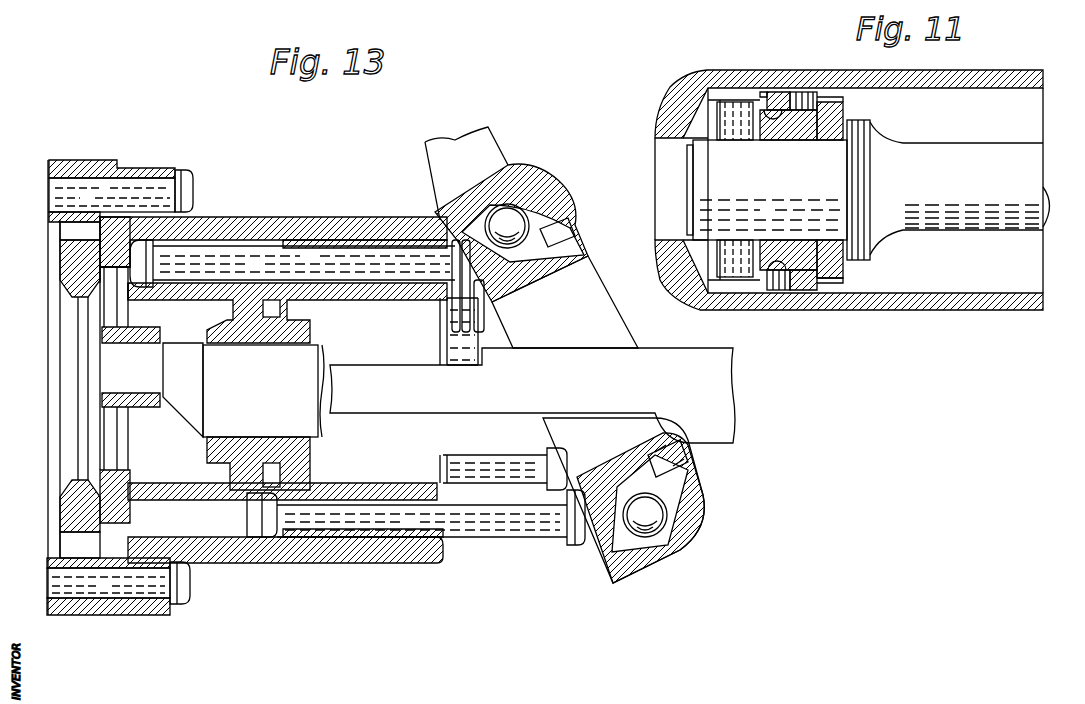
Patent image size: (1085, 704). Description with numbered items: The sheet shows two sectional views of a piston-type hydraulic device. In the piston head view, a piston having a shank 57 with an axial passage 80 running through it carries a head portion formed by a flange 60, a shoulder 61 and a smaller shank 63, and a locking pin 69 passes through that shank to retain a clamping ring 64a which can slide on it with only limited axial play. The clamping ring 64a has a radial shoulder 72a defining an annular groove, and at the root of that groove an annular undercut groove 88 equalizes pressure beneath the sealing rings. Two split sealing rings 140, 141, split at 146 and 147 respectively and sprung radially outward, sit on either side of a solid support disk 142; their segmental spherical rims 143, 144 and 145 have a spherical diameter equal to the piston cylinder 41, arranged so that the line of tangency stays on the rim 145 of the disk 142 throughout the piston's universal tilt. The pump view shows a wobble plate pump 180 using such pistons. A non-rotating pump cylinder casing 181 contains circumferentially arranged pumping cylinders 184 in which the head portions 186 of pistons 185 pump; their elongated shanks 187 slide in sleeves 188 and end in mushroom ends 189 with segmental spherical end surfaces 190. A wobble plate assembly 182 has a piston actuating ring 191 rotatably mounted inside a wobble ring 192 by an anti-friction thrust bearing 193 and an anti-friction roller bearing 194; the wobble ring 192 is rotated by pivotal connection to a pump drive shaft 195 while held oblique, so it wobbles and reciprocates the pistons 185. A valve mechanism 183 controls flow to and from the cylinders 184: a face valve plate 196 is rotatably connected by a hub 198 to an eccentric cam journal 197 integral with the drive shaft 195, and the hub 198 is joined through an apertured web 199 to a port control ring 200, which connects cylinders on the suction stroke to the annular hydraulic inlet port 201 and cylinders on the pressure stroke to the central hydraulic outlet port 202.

In FIG. 13, the wobble plate pump 180 is at (232, 140).
In FIG. 13, the pump cylinder casing 181 is at (278, 210).
In FIG. 13, the wobble plate assembly 182 is at (570, 188).
In FIG. 13, the valve mechanism 183 is at (88, 382).
In FIG. 13, the pumping cylinders 184 is at (207, 245).
In FIG. 13, the pistons 185 is at (233, 253).
In FIG. 13, the head portions 186 is at (150, 240).
In FIG. 13, the shanks 187 is at (273, 252).
In FIG. 13, the sleeves 188 is at (407, 250).
In FIG. 13, the mushroom ends 189 is at (567, 477).
In FIG. 13, the segmental spherical end surfaces 190 is at (567, 482).
In FIG. 13, the piston actuating ring 191 is at (523, 293).
In FIG. 13, the wobble ring 192 is at (514, 188).
In FIG. 13, the anti-friction thrust bearing 193 is at (660, 537).
In FIG. 13, the anti-friction roller bearing 194 is at (683, 467).
In FIG. 13, the pump drive shaft 195 is at (307, 370).
In FIG. 13, the face valve plate 196 is at (113, 222).
In FIG. 13, the cam journal 197 is at (107, 356).
In FIG. 13, the hub 198 is at (150, 338).
In FIG. 13, the apertured web 199 is at (108, 300).
In FIG. 13, the port control ring 200 is at (118, 548).
In FIG. 13, the annular hydraulic inlet port 201 is at (72, 226).
In FIG. 13, the central hydraulic outlet port 202 is at (95, 316).
In FIG. 11, the piston cylinder 41 is at (980, 97).
In FIG. 11, the shank 57 is at (984, 238).
In FIG. 11, the flange 60 is at (857, 175).
In FIG. 11, the shoulder 61 is at (838, 202).
In FIG. 11, the shank 63 is at (835, 157).
In FIG. 11, the clamping ring 64a is at (778, 133).
In FIG. 11, the locking pin 69 is at (723, 115).
In FIG. 11, the radial shoulder 72a is at (717, 88).
In FIG. 11, the axial passage 80 is at (1050, 197).
In FIG. 11, the annular undercut groove 88 is at (777, 280).
In FIG. 11, the split sealing ring 140 is at (777, 92).
In FIG. 11, the split sealing ring 141 is at (813, 283).
In FIG. 11, the support disk 142 is at (802, 92).
In FIG. 11, the segmental spherical rim 143 is at (777, 97).
In FIG. 11, the segmental spherical rim 144 is at (820, 93).
In FIG. 11, the segmental spherical rim 145 is at (793, 92).
In FIG. 11, the split 146 is at (787, 283).
In FIG. 11, the split 147 is at (807, 102).